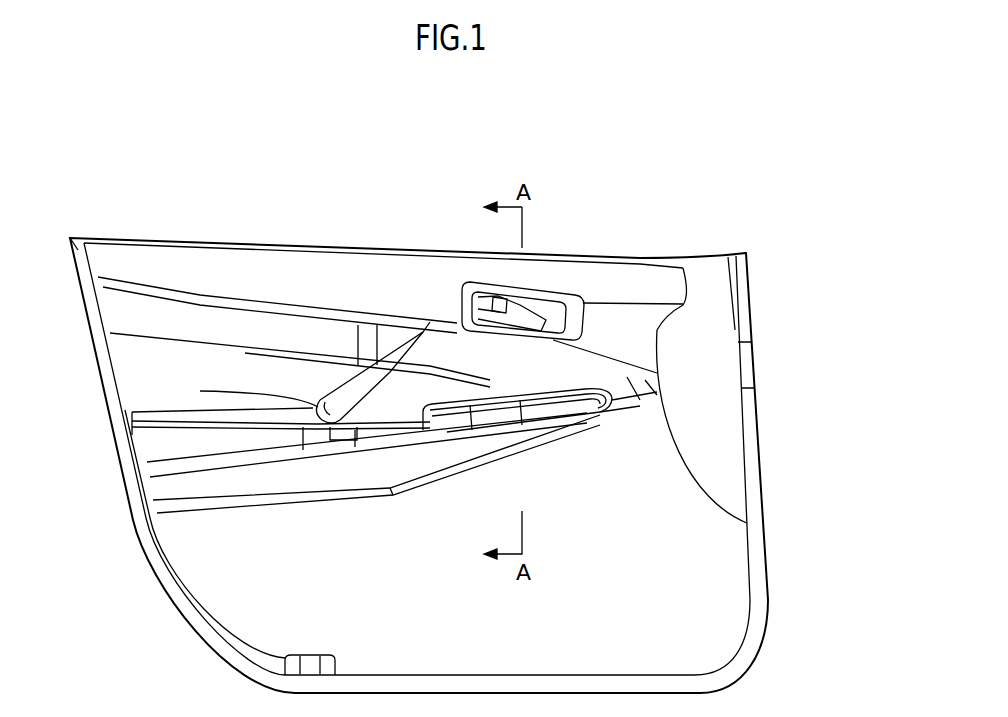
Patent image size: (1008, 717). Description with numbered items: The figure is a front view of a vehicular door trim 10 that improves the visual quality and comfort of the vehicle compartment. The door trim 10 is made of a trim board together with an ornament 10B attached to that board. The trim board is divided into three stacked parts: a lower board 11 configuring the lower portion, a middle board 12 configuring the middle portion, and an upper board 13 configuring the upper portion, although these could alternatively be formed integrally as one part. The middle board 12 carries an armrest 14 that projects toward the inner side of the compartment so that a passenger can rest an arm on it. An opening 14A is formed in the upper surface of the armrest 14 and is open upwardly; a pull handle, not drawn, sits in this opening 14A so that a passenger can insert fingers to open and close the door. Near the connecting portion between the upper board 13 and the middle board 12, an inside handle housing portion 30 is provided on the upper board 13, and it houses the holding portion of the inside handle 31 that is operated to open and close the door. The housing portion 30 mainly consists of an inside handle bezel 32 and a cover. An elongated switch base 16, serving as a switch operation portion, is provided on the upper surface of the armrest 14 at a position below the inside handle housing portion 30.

The door trim 10 is at (728, 233).
The ornament 10B is at (128, 307).
The lower board 11 is at (718, 557).
The middle board 12 is at (548, 365).
The upper board 13 is at (213, 263).
The armrest 14 is at (167, 452).
The opening 14A is at (200, 391).
The switch base 16 is at (463, 367).
The inside handle housing portion 30 is at (567, 291).
The inside handle 31 is at (490, 378).
The inside handle bezel 32 is at (688, 291).